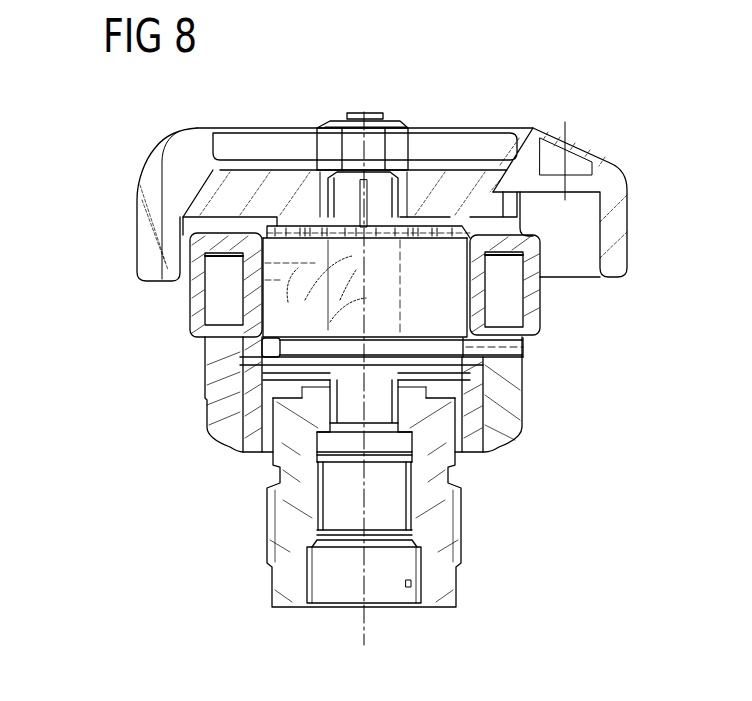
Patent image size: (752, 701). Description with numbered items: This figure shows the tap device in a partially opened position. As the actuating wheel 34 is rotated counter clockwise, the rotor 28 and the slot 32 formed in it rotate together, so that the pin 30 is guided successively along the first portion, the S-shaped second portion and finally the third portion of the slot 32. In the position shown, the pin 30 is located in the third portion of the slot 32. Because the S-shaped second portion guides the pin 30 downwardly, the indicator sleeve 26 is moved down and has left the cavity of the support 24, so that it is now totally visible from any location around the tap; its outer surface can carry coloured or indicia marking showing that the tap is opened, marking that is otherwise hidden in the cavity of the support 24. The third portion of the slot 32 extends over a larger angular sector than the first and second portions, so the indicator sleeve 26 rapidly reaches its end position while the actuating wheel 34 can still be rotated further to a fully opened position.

The support 24 is at (493, 437).
The indicator sleeve 26 is at (523, 392).
The rotor 28 is at (197, 343).
The pin 30 is at (510, 378).
The slot 32 is at (373, 298).
The actuating wheel 34 is at (143, 190).